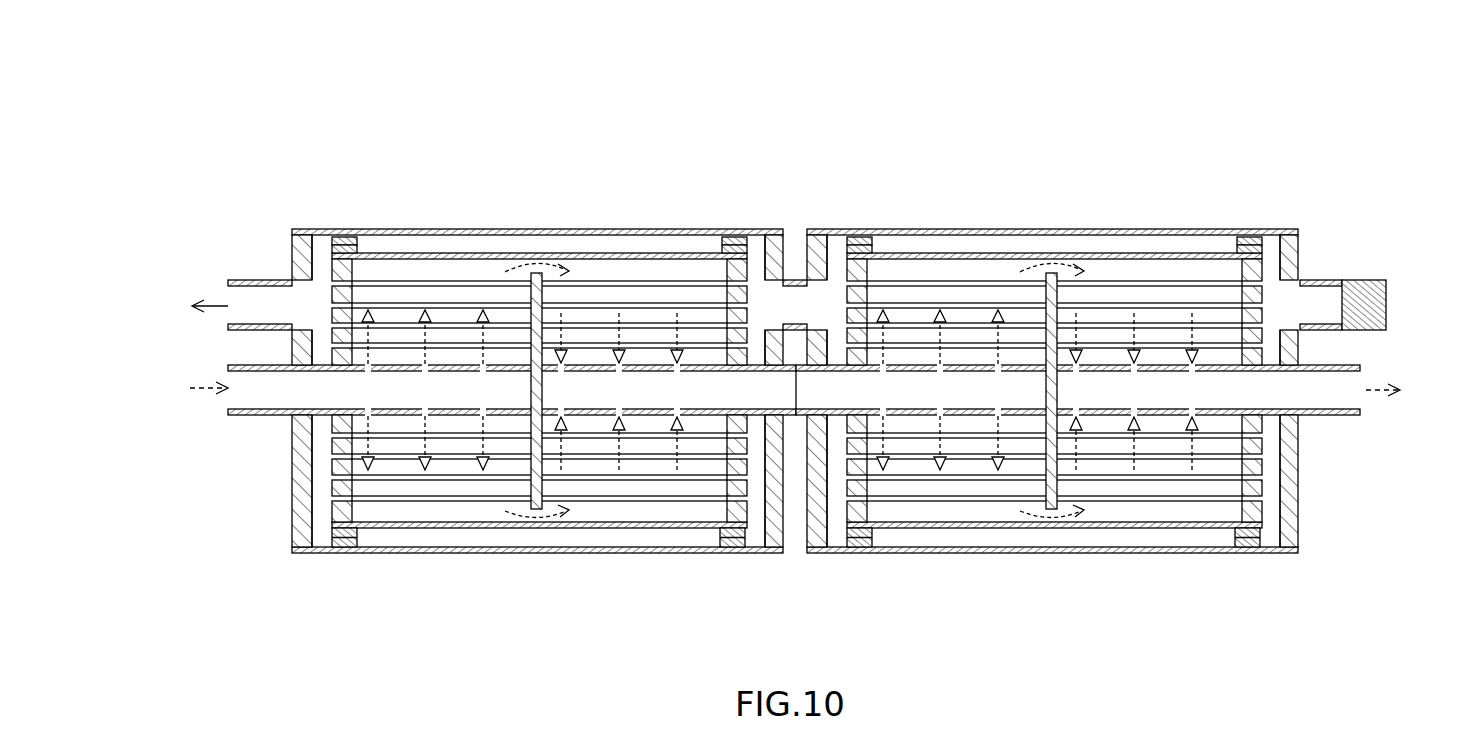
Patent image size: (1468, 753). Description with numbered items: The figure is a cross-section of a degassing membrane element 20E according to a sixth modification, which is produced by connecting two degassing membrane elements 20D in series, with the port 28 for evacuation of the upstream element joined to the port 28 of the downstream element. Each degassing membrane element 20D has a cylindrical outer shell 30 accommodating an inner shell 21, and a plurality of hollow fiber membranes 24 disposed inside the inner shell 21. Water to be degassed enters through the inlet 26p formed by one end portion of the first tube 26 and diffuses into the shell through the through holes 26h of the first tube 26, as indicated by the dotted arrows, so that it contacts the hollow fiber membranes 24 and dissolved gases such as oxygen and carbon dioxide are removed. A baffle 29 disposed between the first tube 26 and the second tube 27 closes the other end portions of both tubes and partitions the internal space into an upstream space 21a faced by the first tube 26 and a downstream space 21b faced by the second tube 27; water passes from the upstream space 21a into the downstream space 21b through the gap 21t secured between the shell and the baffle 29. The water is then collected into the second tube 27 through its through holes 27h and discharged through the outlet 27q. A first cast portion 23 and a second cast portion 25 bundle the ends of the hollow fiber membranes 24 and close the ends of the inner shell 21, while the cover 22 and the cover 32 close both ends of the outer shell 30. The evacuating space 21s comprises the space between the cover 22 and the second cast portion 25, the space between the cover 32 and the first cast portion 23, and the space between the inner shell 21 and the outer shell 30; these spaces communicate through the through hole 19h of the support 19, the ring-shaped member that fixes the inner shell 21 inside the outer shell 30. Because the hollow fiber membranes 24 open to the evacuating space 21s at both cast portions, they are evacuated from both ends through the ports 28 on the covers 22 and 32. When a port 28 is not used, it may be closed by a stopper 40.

The support 19 is at (350, 552).
The through hole 19h is at (340, 550).
The degassing membrane element 20D is at (723, 127).
The degassing membrane element 20E is at (723, 53).
The shell 21 is at (798, 383).
The upstream space 21a is at (372, 268).
The downstream space 21b is at (702, 522).
The evacuating space 21s is at (320, 300).
The gap 21t is at (537, 273).
The cover 22 is at (303, 490).
The first cast portion 23 is at (718, 237).
The hollow fiber membranes 24 is at (447, 298).
The second cast portion 25 is at (340, 507).
The first tube 26 is at (256, 416).
The through holes 26h is at (406, 300).
The inlet 26p is at (228, 376).
The second tube 27 is at (1337, 417).
The through holes 27h is at (592, 300).
The outlet 27q is at (1362, 412).
The port 28 is at (250, 279).
The baffle 29 is at (536, 520).
The outer shell 30 is at (690, 229).
The cover 32 is at (748, 252).
The stopper 40 is at (1365, 290).